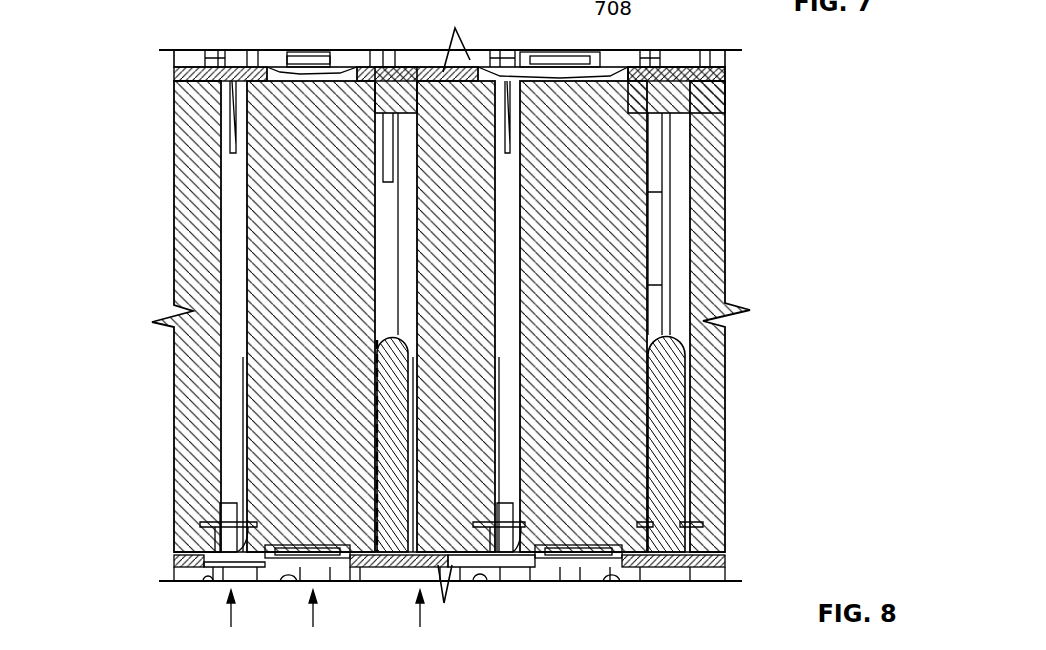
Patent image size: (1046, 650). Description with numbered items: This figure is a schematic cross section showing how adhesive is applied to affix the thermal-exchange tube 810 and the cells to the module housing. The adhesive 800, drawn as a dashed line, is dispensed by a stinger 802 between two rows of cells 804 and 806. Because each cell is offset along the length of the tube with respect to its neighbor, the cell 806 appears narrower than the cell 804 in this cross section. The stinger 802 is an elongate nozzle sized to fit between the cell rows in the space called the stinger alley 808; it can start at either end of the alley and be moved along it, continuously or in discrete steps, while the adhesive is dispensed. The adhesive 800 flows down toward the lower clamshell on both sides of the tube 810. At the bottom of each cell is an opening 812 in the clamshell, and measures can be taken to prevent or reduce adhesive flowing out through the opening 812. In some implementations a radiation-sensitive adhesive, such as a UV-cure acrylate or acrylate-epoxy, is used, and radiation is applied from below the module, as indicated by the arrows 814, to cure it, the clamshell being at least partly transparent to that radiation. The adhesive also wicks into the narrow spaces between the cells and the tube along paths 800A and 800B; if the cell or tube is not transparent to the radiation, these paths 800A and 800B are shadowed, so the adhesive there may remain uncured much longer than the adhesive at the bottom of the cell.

The adhesive 800 is at (378, 333).
The path 800A is at (414, 384).
The path 800B is at (377, 388).
The stinger 802 is at (384, 310).
The cell 804 is at (365, 73).
The cell 806 is at (463, 63).
The stinger alley 808 is at (383, 232).
The tube 810 is at (388, 542).
The opening 812 is at (589, 576).
The arrows 814 is at (228, 624).